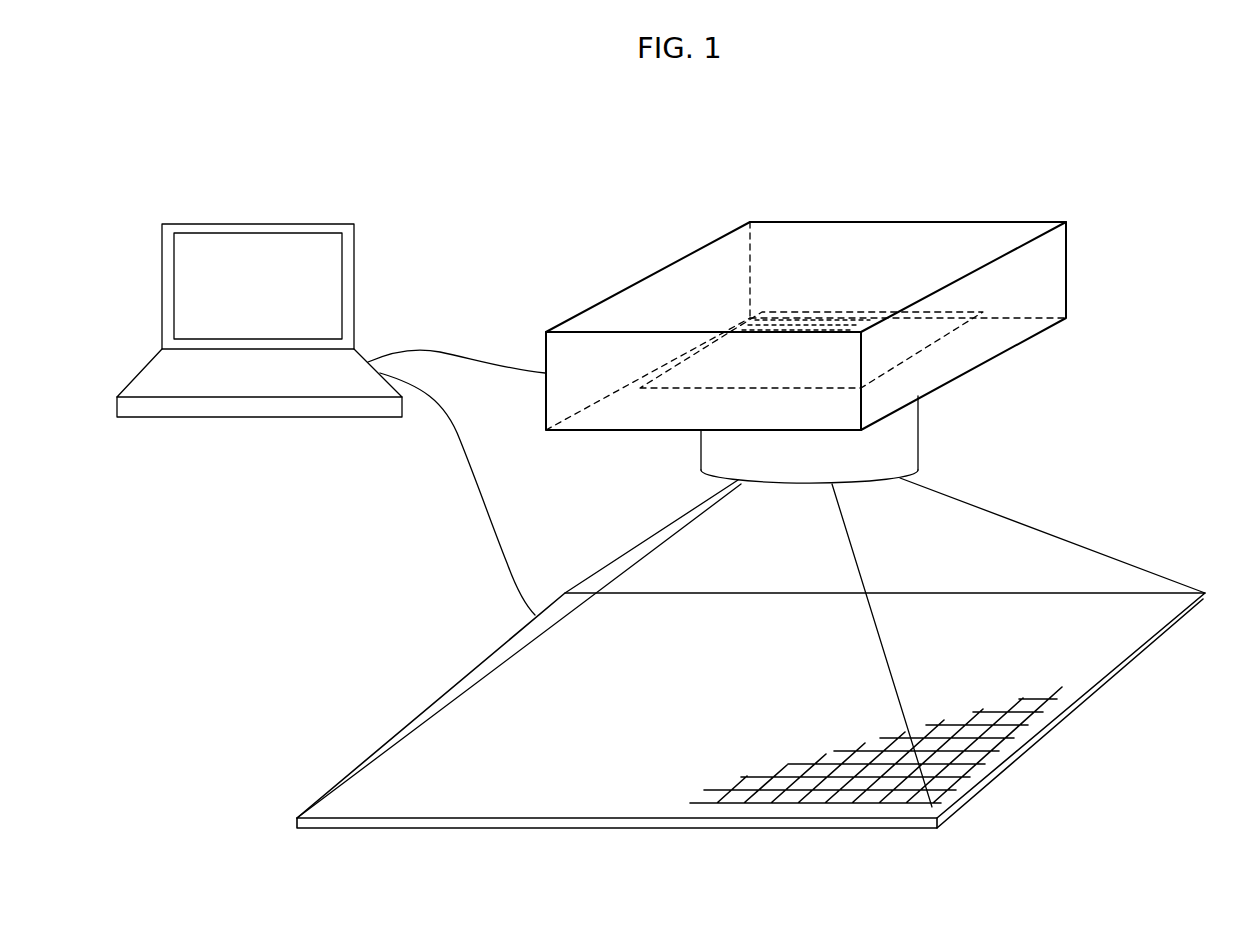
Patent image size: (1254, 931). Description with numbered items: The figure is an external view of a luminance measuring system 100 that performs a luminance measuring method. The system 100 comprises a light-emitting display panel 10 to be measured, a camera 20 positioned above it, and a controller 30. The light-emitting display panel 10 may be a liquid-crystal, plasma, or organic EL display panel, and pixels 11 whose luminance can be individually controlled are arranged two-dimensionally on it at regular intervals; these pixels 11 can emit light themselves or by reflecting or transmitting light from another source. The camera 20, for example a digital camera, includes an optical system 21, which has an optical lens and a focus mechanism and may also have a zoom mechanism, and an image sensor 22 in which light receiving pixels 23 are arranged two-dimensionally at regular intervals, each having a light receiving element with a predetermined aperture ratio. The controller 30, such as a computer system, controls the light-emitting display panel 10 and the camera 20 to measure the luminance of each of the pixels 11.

The luminance measuring system 100 is at (533, 183).
The light-emitting display panel 10 is at (1148, 652).
The pixels 11 is at (972, 755).
The camera 20 is at (995, 221).
The optical system 21 is at (918, 418).
The image sensor 22 is at (825, 310).
The light receiving pixels 23 is at (800, 318).
The controller 30 is at (253, 222).